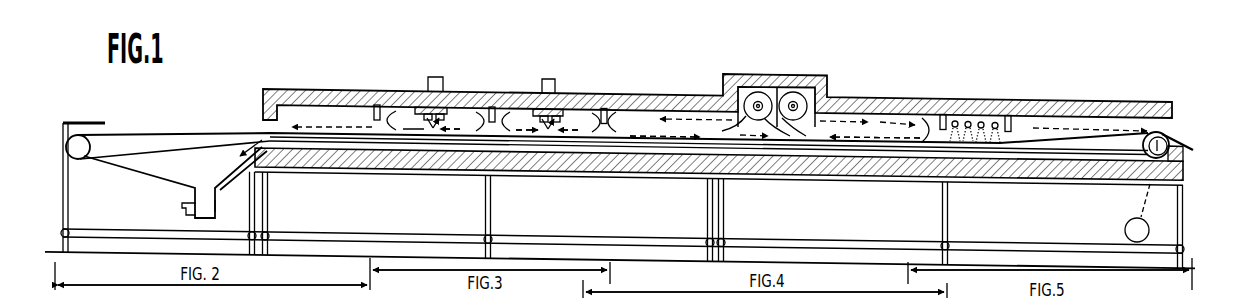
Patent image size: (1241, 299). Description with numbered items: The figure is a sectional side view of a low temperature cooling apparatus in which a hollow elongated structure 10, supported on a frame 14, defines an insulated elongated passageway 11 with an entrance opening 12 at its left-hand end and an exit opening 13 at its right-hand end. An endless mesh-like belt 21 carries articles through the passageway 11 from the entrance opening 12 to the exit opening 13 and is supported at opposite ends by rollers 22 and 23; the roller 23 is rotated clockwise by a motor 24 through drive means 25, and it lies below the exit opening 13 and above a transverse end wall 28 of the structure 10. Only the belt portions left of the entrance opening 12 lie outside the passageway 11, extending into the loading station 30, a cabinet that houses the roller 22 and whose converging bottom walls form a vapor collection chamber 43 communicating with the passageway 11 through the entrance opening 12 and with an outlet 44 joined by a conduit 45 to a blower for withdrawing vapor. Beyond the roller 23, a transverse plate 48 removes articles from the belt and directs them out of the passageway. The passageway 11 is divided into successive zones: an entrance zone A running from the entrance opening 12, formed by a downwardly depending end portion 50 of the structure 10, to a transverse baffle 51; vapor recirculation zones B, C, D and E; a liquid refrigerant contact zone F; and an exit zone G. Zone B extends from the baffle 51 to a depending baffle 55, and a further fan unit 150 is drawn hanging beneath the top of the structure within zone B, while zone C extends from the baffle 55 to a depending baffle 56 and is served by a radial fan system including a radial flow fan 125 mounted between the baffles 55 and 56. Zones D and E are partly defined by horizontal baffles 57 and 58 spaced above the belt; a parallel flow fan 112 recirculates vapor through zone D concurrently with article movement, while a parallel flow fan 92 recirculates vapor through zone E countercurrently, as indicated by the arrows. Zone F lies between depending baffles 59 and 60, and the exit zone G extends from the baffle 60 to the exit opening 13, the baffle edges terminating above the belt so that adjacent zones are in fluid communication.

The hollow elongated structure 10 is at (470, 88).
The elongated passageway 11 is at (326, 118).
The entrance opening 12 is at (258, 128).
The exit opening 13 is at (1176, 122).
The frame 14 is at (270, 208).
The endless belt 21 is at (1040, 140).
The roller 22 is at (86, 158).
The roller 23 is at (1160, 140).
The motor 24 is at (1125, 232).
The drive means 25 is at (1143, 196).
The transverse end wall 28 is at (1185, 165).
The loading station 30 is at (148, 128).
The vapor collection chamber 43 is at (181, 176).
The outlet 44 is at (216, 204).
The conduit 45 is at (180, 206).
The transverse plate 48 is at (1185, 145).
The downwardly depending end portion 50 is at (266, 108).
The baffle 51 is at (377, 105).
The baffle 55 is at (493, 107).
The baffle 56 is at (606, 108).
The horizontal baffle 57 is at (684, 107).
The horizontal baffle 58 is at (866, 111).
The baffle 59 is at (943, 115).
The baffle 60 is at (1010, 117).
The parallel flow fan 92 is at (797, 100).
The parallel flow fan 112 is at (758, 100).
The radial flow fan 125 is at (562, 109).
The nozzle assembly 150 is at (420, 106).
The entrance zone A is at (348, 122).
The vapor recirculation zone B is at (433, 129).
The vapor recirculation zone C is at (548, 128).
The vapor recirculation zone D is at (715, 133).
The vapor recirculation zone E is at (866, 137).
The liquid refrigerant contact zone F is at (973, 120).
The exit zone G is at (1078, 122).